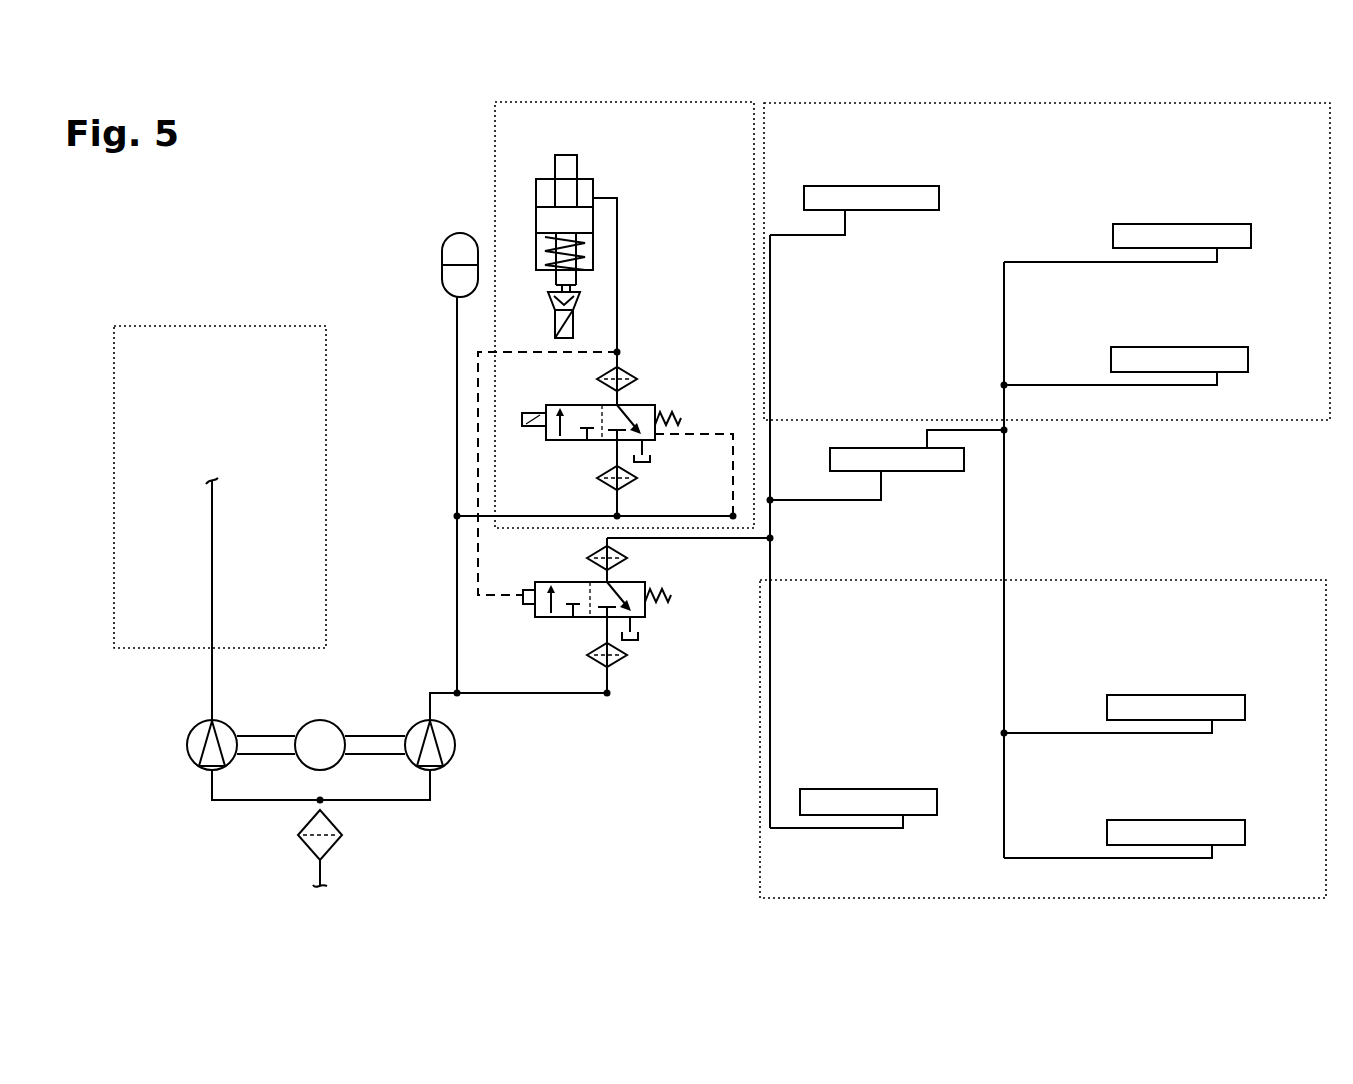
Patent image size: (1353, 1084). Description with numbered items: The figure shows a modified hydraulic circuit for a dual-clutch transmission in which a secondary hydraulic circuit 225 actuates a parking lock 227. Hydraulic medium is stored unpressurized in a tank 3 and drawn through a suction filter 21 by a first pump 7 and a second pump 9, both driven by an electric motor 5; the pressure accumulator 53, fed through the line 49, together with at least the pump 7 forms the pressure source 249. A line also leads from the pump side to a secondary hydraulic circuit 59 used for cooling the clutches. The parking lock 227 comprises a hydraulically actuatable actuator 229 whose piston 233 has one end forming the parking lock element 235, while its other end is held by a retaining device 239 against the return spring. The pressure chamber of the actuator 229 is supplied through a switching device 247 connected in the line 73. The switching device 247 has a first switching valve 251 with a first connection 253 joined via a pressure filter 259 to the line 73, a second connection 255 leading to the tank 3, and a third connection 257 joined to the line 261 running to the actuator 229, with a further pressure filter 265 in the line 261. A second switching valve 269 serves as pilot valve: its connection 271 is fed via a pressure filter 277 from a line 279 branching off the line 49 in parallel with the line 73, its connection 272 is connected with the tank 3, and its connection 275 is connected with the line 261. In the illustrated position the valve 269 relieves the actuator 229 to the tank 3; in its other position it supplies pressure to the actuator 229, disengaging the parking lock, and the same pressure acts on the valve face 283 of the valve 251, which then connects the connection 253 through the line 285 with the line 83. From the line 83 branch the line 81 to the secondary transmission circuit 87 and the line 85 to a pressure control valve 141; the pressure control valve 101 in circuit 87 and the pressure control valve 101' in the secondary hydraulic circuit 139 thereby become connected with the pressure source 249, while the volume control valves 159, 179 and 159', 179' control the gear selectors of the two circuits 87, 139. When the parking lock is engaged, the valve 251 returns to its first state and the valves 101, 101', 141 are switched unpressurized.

The tank 3 is at (645, 466).
The electric motor 5 is at (325, 727).
The first pump 7 is at (439, 772).
The second pump 9 is at (205, 772).
The suction filter 21 is at (336, 848).
The line 49 is at (455, 394).
The pressure accumulator 53 is at (442, 262).
The secondary hydraulic circuit 59 is at (204, 322).
The line 73 is at (497, 693).
The line 81 is at (770, 334).
The line 83 is at (771, 600).
The line 85 is at (855, 503).
The secondary transmission circuit 87 is at (1160, 421).
The pressure control valve 101 is at (859, 178).
The pressure control valve 101' is at (859, 776).
The secondary hydraulic circuit 139 is at (1153, 580).
The pressure control valve 141 is at (888, 437).
The volume control valve 159 is at (1142, 211).
The volume control valve 159' is at (1143, 683).
The volume control valve 179 is at (1132, 333).
The volume control valve 179' is at (1132, 806).
The secondary hydraulic circuit 225 is at (495, 140).
The parking lock 227 is at (619, 206).
The actuator 229 is at (514, 209).
The piston 233 is at (584, 222).
The parking lock element 235 is at (566, 168).
The retaining device 239 is at (592, 297).
The switching device 247 is at (678, 700).
The pressure source 249 is at (483, 779).
The first switching valve 251 is at (565, 575).
The first connection 253 is at (600, 618).
The second connection 255 is at (648, 620).
The third connection 257 is at (609, 581).
The pressure filter 259 is at (596, 668).
The line 261 is at (619, 345).
The pressure filter 265 is at (637, 376).
The second switching valve 269 is at (583, 404).
The connection 271 is at (614, 442).
The connection 272 is at (645, 440).
The connection 275 is at (620, 405).
The pressure filter 277 is at (602, 486).
The line 279 is at (480, 520).
The valve face 283 is at (525, 607).
The line 285 is at (742, 535).